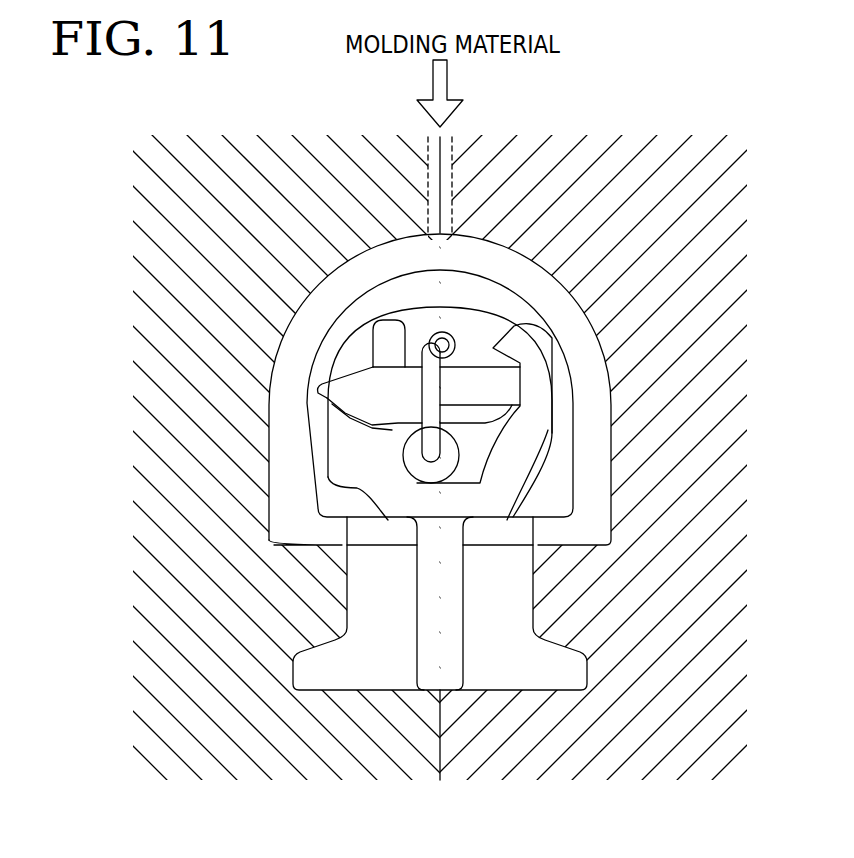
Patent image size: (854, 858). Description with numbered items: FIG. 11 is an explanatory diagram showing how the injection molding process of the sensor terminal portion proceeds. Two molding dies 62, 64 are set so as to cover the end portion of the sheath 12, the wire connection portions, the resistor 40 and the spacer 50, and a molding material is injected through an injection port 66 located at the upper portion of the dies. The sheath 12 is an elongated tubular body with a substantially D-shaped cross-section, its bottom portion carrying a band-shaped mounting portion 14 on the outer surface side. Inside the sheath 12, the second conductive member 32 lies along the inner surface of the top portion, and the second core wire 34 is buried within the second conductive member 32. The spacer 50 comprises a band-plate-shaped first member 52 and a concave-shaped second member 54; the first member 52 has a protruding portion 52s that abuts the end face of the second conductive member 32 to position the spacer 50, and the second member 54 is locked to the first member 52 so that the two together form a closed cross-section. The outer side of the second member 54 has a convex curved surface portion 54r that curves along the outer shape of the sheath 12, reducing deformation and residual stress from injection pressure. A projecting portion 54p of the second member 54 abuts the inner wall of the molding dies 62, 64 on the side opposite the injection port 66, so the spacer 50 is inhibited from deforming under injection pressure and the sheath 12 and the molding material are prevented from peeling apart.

The sheath 12 is at (582, 367).
The mounting portion 14 is at (355, 540).
The second conductive member 32 is at (463, 330).
The second core wire 34 is at (432, 335).
The resistor 40 is at (455, 433).
The spacer 50 is at (486, 592).
The first member 52 is at (352, 328).
The protruding portion 52s is at (383, 325).
The second member 54 is at (317, 446).
The projecting portion 54p is at (427, 635).
The convex curved surface portion 54r is at (558, 325).
The molding die 62 is at (662, 220).
The molding die 64 is at (207, 215).
The injection port 66 is at (469, 190).